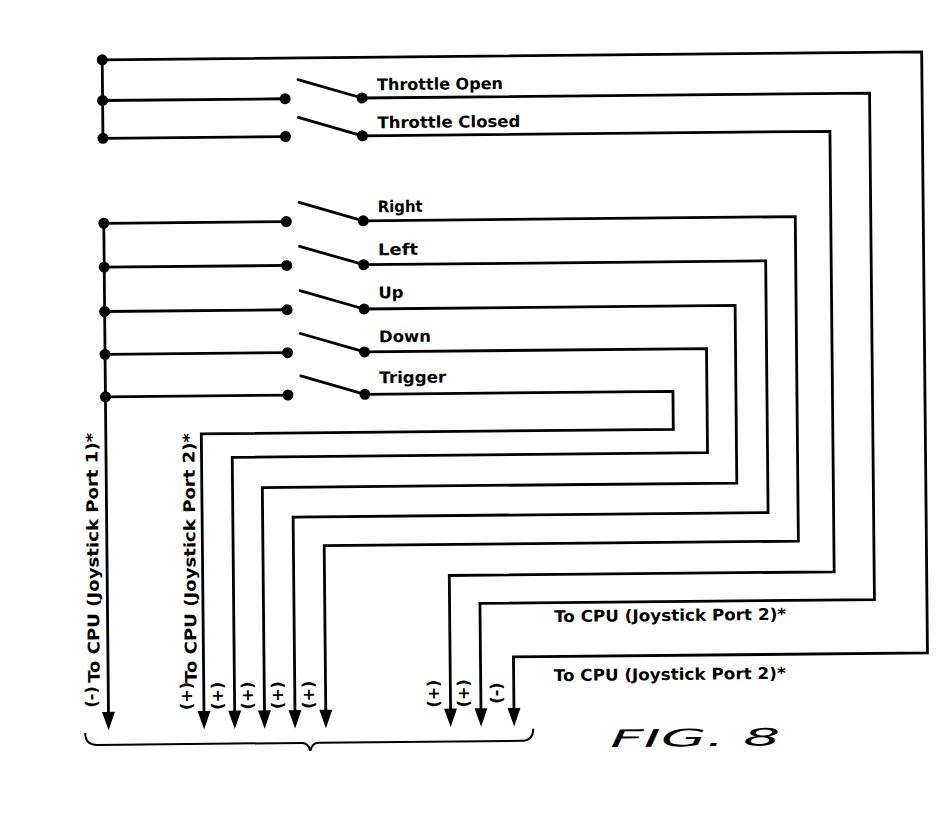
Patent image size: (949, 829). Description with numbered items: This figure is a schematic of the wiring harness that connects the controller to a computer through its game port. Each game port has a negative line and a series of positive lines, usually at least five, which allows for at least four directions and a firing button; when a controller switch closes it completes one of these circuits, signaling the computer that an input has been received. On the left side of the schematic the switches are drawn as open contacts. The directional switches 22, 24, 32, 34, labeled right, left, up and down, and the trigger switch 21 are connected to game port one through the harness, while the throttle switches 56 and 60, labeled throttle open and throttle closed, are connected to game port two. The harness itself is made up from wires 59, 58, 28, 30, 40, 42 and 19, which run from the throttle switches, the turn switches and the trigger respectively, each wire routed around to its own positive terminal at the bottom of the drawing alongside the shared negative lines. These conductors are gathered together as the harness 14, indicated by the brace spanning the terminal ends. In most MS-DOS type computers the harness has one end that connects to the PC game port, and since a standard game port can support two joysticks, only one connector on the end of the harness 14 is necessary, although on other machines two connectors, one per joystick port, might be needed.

The throttle switch 56 is at (304, 82).
The throttle switch 60 is at (304, 120).
The directional switch 22 is at (304, 205).
The directional switch 24 is at (304, 249).
The directional switch 32 is at (304, 293).
The directional switch 34 is at (304, 336).
The trigger switch 21 is at (304, 378).
The wire 59 is at (675, 96).
The wire 58 is at (679, 134).
The wire 28 is at (625, 219).
The wire 30 is at (616, 263).
The wire 40 is at (622, 307).
The wire 42 is at (638, 350).
The wire 19 is at (642, 390).
The harness 14 is at (309, 759).